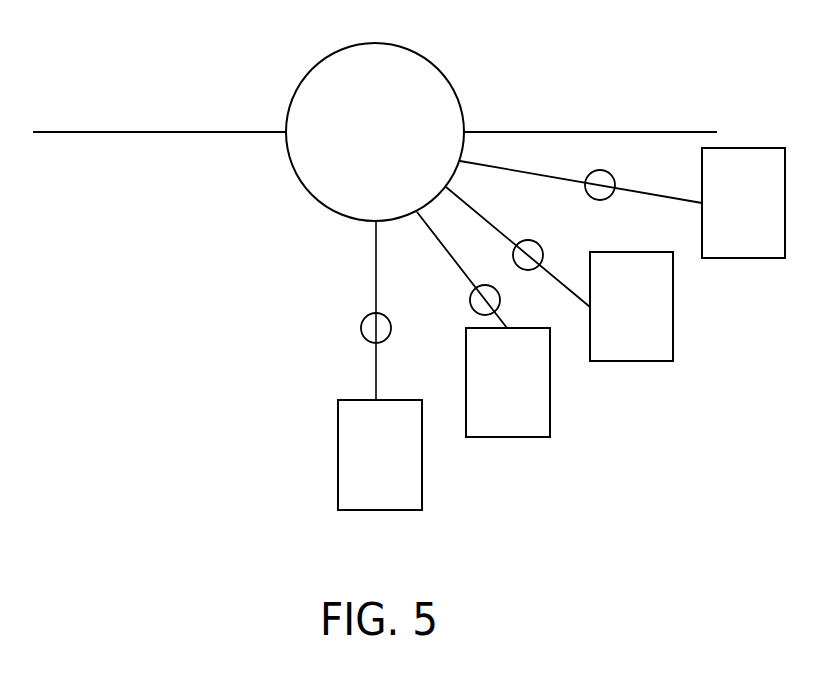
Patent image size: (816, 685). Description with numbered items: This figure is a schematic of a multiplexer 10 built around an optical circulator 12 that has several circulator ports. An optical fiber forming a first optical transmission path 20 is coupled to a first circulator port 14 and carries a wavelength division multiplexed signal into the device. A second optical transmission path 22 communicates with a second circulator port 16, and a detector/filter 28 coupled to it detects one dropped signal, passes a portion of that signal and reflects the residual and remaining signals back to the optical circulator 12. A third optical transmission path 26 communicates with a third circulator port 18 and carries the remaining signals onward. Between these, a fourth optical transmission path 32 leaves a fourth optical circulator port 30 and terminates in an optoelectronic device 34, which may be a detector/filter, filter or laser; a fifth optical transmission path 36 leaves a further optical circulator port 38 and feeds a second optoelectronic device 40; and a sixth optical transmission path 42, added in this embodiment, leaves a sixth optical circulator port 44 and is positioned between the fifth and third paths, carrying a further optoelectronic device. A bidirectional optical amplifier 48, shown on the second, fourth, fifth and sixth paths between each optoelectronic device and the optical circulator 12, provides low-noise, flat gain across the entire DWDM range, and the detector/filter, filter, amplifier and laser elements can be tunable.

The multiplexer 10 is at (233, 364).
The optical circulator 12 is at (427, 55).
The first circulator port 14 is at (283, 132).
The second circulator port 16 is at (366, 228).
The third circulator port 18 is at (473, 130).
The first optical transmission path 20 is at (150, 132).
The second optical transmission path 22 is at (376, 290).
The third optical transmission path 26 is at (620, 131).
The detector/filter 28 is at (338, 436).
The fourth optical circulator port 30 is at (413, 213).
The fourth optical transmission path 32 is at (468, 280).
The optoelectronic device 34 is at (512, 437).
The fifth optical transmission path 36 is at (558, 290).
The optical circulator port 38 is at (447, 192).
The second optoelectronic device 40 is at (632, 361).
The sixth optical transmission path 42 is at (667, 200).
The sixth optical circulator port 44 is at (465, 170).
The bidirectional optical amplifier 48 is at (362, 334).